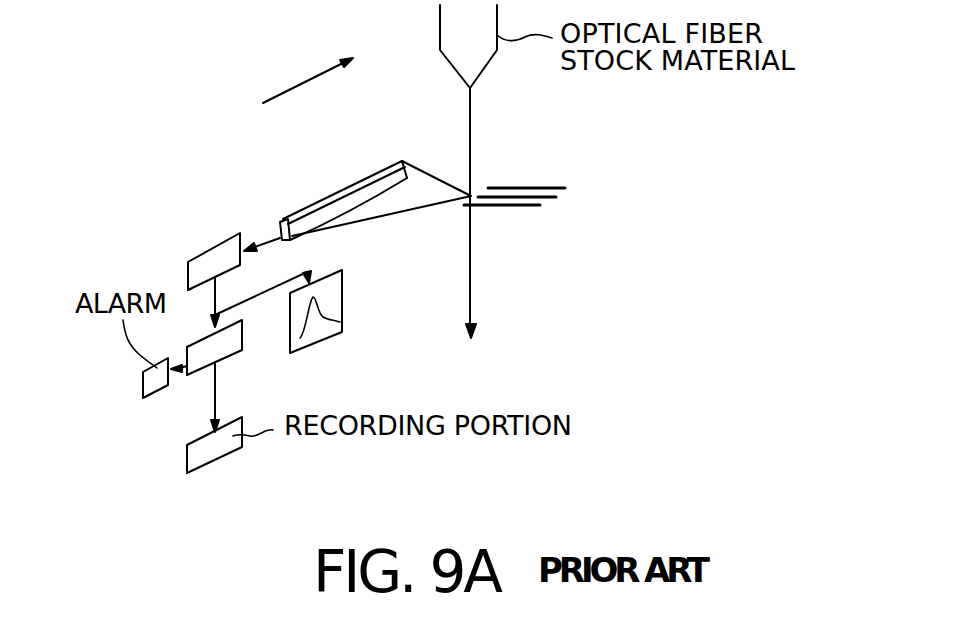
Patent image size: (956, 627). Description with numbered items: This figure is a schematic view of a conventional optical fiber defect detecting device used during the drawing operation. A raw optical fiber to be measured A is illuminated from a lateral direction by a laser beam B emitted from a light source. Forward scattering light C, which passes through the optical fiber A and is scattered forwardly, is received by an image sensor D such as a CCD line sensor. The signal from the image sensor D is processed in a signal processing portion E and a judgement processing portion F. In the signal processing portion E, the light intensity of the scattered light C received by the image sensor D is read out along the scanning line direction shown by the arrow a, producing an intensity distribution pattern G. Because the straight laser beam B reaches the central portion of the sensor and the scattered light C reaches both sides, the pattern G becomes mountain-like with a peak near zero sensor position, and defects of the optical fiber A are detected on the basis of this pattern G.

The optical fiber to be measured A is at (471, 135).
The laser beam B is at (522, 212).
The forward scattering light C is at (408, 203).
The image sensor D is at (345, 184).
The signal processing portion E is at (221, 258).
The judgement processing portion F is at (230, 344).
The intensity distribution pattern G is at (342, 321).
The scanning line direction a is at (319, 71).